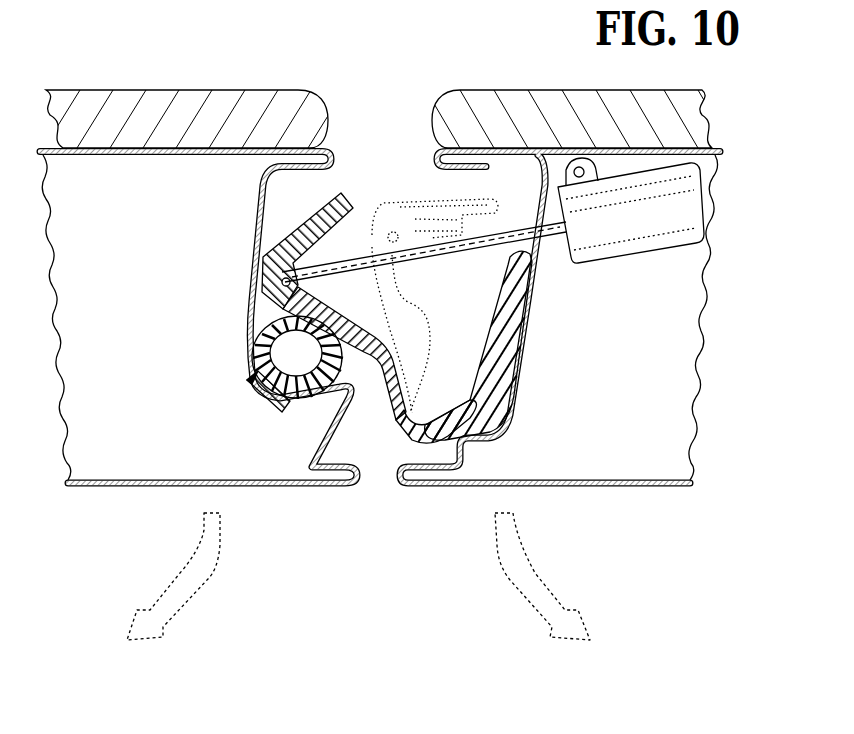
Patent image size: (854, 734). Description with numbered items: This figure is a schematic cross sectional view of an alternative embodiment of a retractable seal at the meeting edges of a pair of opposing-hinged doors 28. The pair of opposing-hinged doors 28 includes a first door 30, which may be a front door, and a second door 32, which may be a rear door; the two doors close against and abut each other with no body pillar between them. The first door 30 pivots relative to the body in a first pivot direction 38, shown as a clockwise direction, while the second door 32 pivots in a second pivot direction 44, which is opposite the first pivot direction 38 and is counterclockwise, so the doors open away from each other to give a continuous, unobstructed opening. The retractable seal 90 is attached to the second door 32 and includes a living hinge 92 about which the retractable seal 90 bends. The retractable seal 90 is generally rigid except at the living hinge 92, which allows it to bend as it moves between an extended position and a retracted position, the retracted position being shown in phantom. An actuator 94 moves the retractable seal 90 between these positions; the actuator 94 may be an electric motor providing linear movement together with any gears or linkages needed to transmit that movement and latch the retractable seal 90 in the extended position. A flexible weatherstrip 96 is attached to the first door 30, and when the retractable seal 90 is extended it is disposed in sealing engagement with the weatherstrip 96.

The pair of opposing-hinged doors 28 is at (385, 130).
The first door 30 is at (125, 488).
The second door 32 is at (603, 488).
The first pivot direction 38 is at (218, 560).
The second pivot direction 44 is at (500, 560).
The retractable seal 90 is at (432, 300).
The living hinge 92 is at (403, 440).
The actuator 94 is at (648, 245).
The flexible weatherstrip 96 is at (255, 318).